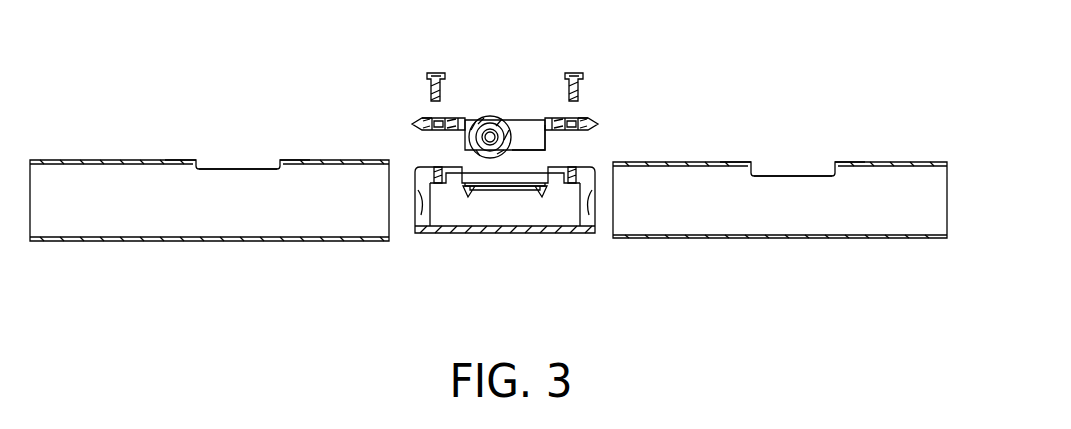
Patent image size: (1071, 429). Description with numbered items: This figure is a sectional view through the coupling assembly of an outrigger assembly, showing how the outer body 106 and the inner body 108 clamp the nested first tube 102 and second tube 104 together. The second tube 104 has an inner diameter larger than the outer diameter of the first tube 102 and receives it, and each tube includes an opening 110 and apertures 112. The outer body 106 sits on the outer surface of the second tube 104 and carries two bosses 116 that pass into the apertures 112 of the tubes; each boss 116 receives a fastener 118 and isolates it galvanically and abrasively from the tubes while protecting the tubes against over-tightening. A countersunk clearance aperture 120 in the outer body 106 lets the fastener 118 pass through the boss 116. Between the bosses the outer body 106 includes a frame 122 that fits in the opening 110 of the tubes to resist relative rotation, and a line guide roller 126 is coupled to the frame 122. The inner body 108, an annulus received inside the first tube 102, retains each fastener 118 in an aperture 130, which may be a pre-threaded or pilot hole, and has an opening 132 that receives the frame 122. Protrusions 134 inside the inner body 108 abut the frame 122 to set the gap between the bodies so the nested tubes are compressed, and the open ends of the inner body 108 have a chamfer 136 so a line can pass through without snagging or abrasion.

The first tube 102 is at (900, 162).
The second tube 104 is at (70, 160).
The outer body 106 is at (507, 118).
The inner body 108 is at (522, 234).
The opening 110 is at (222, 166).
The aperture 112 is at (170, 160).
The boss 116 is at (413, 124).
The fastener 118 is at (436, 72).
The aperture 120 is at (423, 118).
The frame 122 is at (532, 147).
The roller 126 is at (483, 116).
The aperture 130 is at (433, 167).
The opening 132 is at (485, 183).
The protrusion 134 is at (520, 189).
The chamfer 136 is at (422, 205).